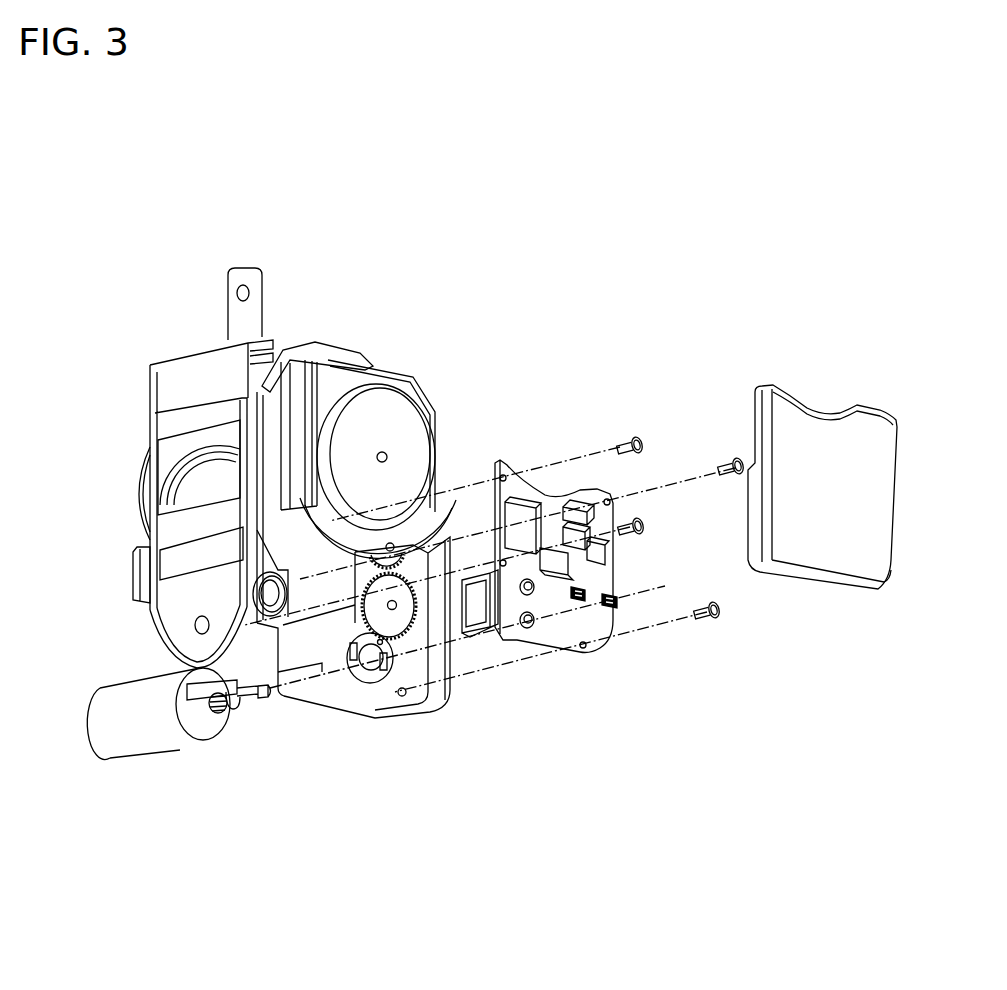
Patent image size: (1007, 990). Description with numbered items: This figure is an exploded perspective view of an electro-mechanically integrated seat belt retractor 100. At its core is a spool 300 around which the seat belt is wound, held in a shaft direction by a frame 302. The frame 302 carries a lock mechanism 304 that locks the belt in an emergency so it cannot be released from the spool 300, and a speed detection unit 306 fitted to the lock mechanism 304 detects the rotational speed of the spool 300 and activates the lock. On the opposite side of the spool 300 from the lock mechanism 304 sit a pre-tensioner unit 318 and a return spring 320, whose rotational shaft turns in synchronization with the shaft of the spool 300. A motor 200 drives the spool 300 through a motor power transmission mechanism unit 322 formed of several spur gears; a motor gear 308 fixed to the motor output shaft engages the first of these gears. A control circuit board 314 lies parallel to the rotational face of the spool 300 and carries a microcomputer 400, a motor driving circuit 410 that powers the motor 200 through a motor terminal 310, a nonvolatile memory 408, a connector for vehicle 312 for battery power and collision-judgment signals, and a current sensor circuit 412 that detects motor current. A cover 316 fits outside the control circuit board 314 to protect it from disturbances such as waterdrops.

The electro-mechanically integrated seat belt retractor 100 is at (672, 183).
The motor 200 is at (150, 730).
The spool 300 is at (215, 477).
The frame 302 is at (145, 382).
The lock mechanism 304 is at (133, 493).
The speed detection unit 306 is at (130, 572).
The motor gear 308 is at (230, 713).
The motor terminal 310 is at (262, 698).
The connector for vehicle 312 is at (477, 627).
The control circuit board 314 is at (597, 625).
The cover 316 is at (853, 560).
The pre-tensioner unit 318 is at (330, 347).
The return spring 320 is at (382, 410).
The motor power transmission mechanism unit 322 is at (442, 540).
The microcomputer 400 is at (580, 535).
The nonvolatile memory 408 is at (623, 497).
The motor driving circuit 410 is at (528, 508).
The current sensor circuit 412 is at (612, 601).